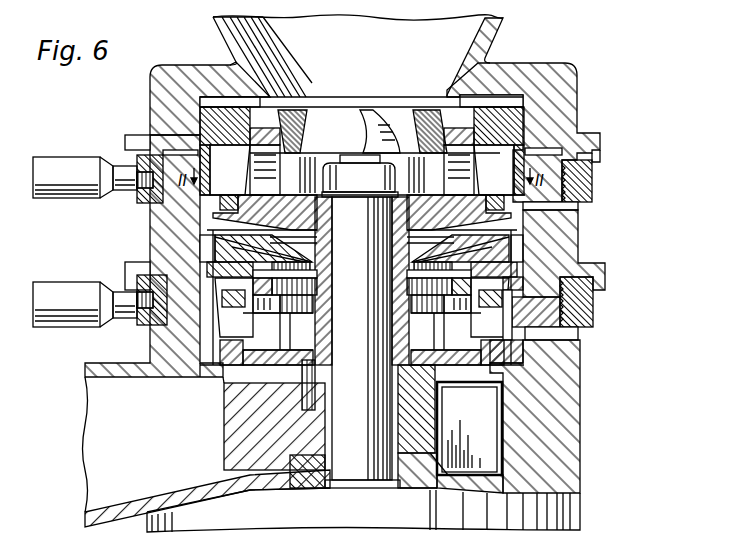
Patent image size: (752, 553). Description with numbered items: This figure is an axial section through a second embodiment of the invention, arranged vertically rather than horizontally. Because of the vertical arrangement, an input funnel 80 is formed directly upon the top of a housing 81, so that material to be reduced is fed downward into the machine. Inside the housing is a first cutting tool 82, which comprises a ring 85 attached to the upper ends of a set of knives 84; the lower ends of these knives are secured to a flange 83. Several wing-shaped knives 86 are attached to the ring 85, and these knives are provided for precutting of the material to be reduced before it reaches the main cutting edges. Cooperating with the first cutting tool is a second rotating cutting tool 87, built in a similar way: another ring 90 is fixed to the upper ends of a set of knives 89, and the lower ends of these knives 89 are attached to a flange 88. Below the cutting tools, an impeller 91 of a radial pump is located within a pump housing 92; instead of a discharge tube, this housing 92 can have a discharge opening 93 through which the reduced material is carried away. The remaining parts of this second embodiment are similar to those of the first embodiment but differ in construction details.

The input funnel 80 is at (490, 34).
The housing 81 is at (579, 90).
The first cutting tool 82 is at (470, 228).
The flange 83 is at (500, 234).
The knives 84 is at (458, 162).
The ring 85 is at (167, 133).
The wing-shaped knives 86 is at (417, 107).
The second rotating cutting tool 87 is at (578, 340).
The flange 88 is at (560, 375).
The knives 89 is at (220, 367).
The ring 90 is at (597, 297).
The impeller 91 is at (480, 420).
The housing 92 is at (557, 470).
The discharge opening 93 is at (100, 447).